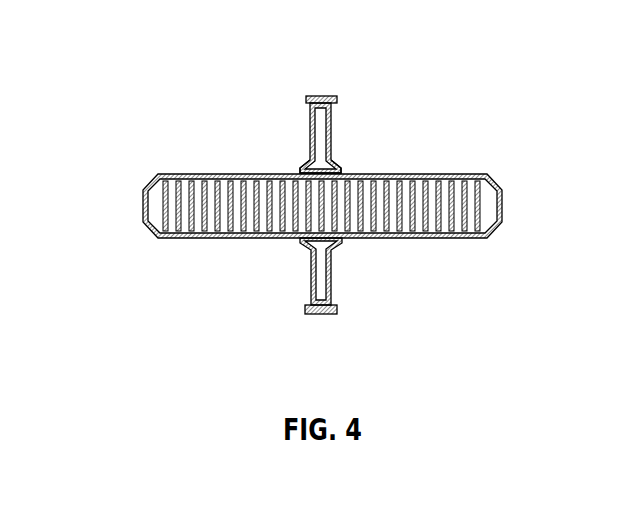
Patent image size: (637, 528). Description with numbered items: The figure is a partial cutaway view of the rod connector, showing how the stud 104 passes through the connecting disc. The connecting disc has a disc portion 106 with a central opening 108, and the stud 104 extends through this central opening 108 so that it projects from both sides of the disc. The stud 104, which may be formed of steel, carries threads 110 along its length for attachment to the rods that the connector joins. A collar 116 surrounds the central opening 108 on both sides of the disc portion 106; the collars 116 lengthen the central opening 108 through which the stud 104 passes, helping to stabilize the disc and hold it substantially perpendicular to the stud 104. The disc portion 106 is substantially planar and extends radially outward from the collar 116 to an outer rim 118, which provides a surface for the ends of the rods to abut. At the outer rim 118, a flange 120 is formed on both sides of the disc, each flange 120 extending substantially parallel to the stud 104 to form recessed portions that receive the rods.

The stud 104 is at (150, 213).
The disc portion 106 is at (332, 268).
The central opening 108 is at (305, 172).
The threads 110 is at (200, 218).
The collar 116 is at (338, 172).
The outer rim 118 is at (328, 98).
The flange 120 is at (338, 306).